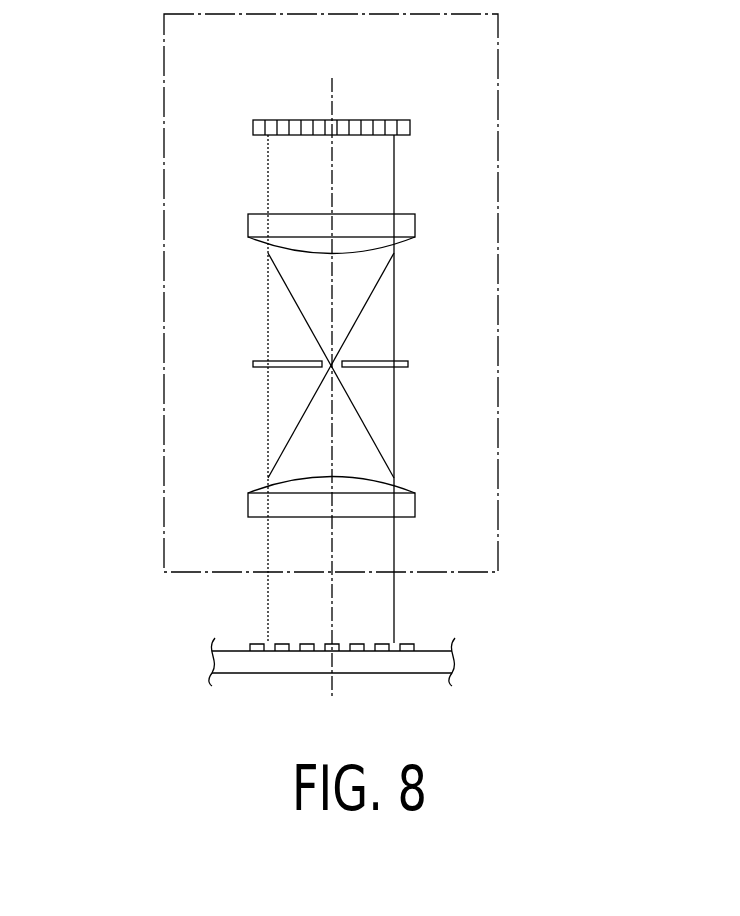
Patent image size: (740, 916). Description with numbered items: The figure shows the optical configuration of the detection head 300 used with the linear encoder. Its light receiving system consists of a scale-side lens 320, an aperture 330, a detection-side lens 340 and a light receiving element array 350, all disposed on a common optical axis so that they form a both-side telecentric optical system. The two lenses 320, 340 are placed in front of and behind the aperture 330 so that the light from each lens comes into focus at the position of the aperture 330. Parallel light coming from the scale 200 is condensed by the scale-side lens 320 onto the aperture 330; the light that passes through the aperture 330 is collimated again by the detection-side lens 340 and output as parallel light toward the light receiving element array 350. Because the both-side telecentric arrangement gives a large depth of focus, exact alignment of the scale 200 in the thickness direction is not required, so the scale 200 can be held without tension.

The scale 200 is at (428, 650).
The detection head 300 is at (498, 234).
The scale-side lens 320 is at (248, 503).
The aperture 330 is at (253, 364).
The detection-side lens 340 is at (248, 228).
The light receiving element array 350 is at (253, 127).